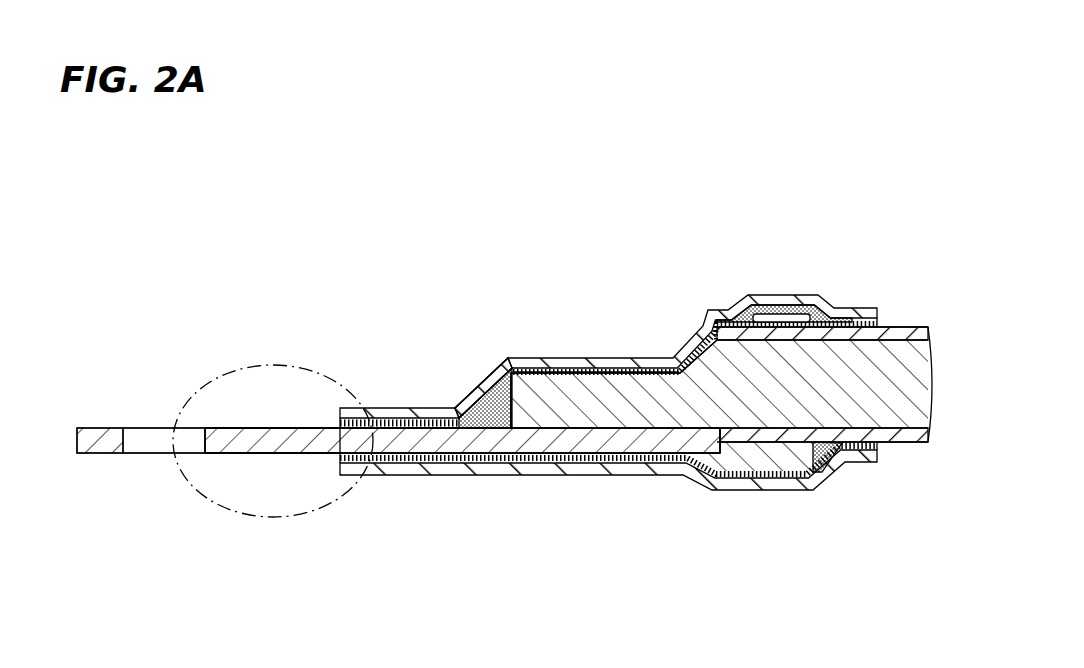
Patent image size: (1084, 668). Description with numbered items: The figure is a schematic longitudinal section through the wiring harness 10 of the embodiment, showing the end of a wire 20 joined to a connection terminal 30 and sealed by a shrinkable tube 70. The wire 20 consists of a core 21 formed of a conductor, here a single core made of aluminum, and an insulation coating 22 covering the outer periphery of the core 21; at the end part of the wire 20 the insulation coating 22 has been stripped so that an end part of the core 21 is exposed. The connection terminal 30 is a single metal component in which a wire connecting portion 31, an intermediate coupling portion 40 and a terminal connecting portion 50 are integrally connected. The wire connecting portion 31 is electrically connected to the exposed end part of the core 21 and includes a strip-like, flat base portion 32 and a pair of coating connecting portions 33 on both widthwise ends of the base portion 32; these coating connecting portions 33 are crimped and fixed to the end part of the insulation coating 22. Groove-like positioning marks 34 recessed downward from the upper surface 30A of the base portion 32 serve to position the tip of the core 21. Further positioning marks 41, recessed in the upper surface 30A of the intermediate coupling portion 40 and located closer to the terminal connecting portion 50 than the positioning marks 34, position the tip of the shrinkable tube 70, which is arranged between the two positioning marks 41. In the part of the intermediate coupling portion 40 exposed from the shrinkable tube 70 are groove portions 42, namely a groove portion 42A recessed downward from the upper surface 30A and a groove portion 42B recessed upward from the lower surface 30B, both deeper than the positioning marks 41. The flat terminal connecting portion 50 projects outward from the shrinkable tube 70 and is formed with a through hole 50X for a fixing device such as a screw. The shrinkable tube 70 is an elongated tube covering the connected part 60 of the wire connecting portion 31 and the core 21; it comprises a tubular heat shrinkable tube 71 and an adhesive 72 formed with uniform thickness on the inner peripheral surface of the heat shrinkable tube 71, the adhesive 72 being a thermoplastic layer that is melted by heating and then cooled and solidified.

The wiring harness 10 is at (182, 269).
The wire 20 is at (940, 512).
The core 21 is at (893, 417).
The insulation coating 22 is at (917, 440).
The connection terminal 30 is at (88, 424).
The upper surface 30A is at (388, 427).
The lower surface 30B is at (460, 455).
The wire connecting portion 31 is at (632, 442).
The base portion 32 is at (632, 442).
The coating connecting portions 33 is at (776, 320).
The positioning marks 34 is at (510, 432).
The intermediate coupling portion 40 is at (393, 467).
The positioning marks 41 is at (305, 455).
The groove portions 42 is at (332, 327).
The groove portion 42A is at (257, 428).
The groove portion 42B is at (270, 453).
The terminal connecting portion 50 is at (105, 448).
The through hole 50X is at (133, 442).
The connected part 60 is at (550, 373).
The shrinkable tube 70 is at (500, 337).
The heat shrinkable tube 71 is at (466, 386).
The adhesive 72 is at (497, 402).